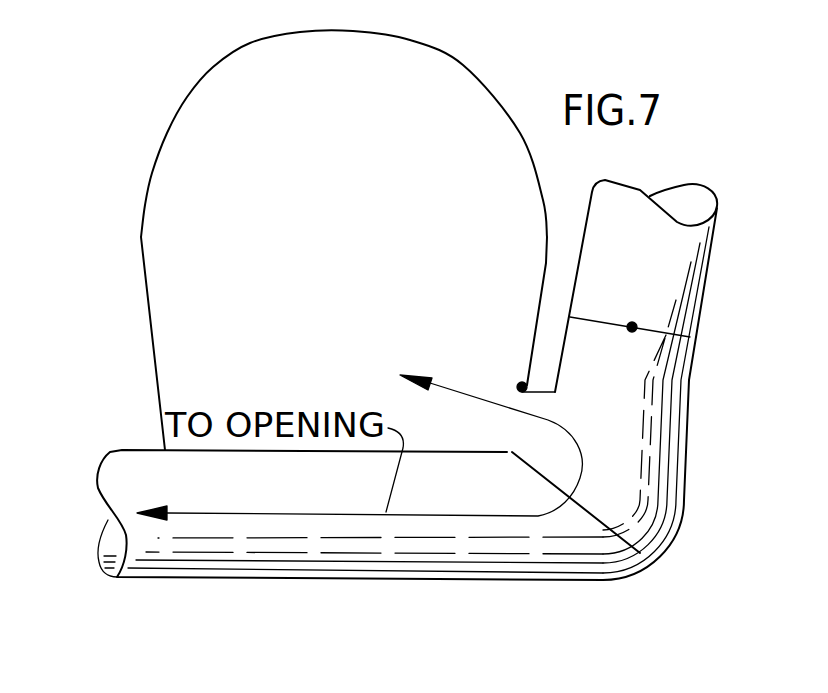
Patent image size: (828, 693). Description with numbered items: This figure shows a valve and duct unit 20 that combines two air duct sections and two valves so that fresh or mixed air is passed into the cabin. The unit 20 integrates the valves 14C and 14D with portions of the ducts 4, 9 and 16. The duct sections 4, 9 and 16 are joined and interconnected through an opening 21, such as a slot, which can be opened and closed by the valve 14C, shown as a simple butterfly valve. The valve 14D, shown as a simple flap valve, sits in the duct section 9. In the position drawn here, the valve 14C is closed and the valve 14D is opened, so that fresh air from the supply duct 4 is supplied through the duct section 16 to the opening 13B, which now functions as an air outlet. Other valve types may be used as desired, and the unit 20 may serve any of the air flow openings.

The valve and duct unit 20 is at (168, 52).
The supply duct 4 is at (461, 95).
The duct section 9 is at (673, 260).
The valve 14C is at (697, 340).
The valve 14D is at (520, 385).
The opening 21 is at (528, 404).
The opening 13B is at (517, 452).
The duct section 16 is at (347, 545).